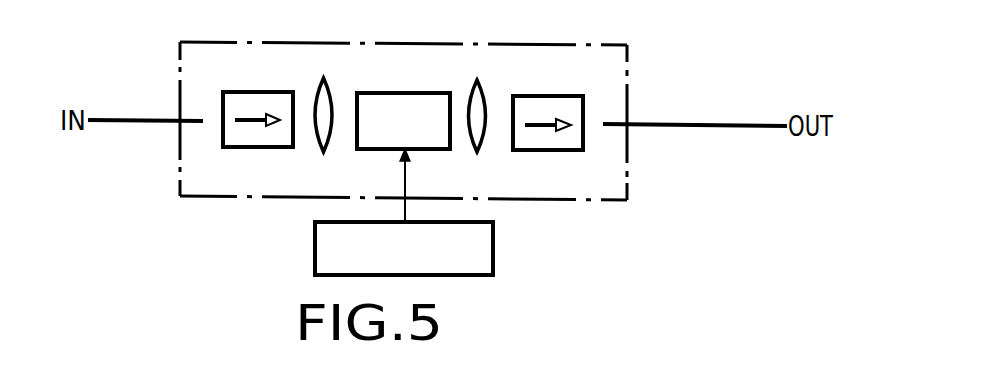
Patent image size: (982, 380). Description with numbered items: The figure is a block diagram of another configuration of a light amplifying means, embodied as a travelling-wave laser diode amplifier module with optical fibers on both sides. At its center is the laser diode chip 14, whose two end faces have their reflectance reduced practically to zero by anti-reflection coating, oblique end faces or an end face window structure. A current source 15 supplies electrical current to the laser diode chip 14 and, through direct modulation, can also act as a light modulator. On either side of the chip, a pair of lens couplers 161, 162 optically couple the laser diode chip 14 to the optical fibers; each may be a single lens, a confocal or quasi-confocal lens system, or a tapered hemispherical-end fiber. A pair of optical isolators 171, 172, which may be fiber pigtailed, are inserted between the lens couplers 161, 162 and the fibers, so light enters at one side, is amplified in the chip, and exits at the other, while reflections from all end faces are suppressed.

The laser diode chip 14 is at (417, 93).
The current source 15 is at (495, 258).
The lens coupler 161 is at (318, 132).
The lens coupler 162 is at (471, 133).
The optical isolator 171 is at (256, 147).
The optical isolator 172 is at (553, 150).